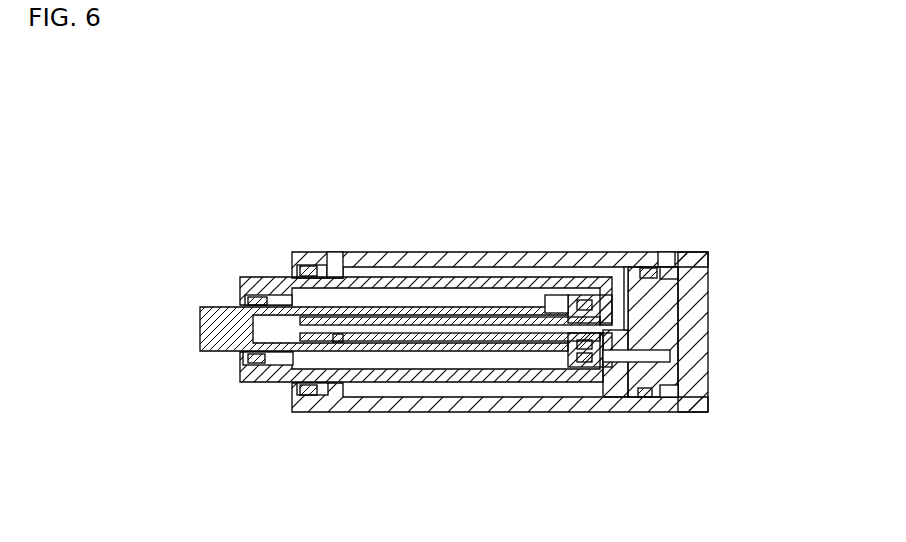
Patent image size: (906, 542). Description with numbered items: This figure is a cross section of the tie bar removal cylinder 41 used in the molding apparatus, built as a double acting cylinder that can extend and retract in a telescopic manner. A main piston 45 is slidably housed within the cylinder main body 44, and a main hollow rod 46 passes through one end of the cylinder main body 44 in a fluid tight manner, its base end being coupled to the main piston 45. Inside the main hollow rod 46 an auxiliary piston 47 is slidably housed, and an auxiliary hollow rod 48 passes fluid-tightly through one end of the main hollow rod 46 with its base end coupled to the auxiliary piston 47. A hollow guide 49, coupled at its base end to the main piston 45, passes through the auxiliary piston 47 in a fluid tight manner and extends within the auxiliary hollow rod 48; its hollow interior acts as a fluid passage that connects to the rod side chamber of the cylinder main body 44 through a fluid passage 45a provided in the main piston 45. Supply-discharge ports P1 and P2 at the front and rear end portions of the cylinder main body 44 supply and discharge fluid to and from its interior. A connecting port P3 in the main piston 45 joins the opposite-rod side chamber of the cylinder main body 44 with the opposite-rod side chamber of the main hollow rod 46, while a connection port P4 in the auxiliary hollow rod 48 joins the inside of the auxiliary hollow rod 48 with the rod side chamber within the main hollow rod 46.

The tie bar removal cylinder 41 is at (503, 314).
The cylinder main body 44 is at (500, 280).
The main piston 45 is at (503, 332).
The fluid passage 45a is at (606, 239).
The main hollow rod 46 is at (426, 397).
The auxiliary piston 47 is at (600, 408).
The auxiliary hollow rod 48 is at (450, 417).
The hollow guide 49 is at (325, 425).
The supply-discharge port P1 is at (679, 214).
The supply-discharge port P2 is at (325, 213).
The connecting port P3 is at (704, 359).
The connection port P4 is at (543, 231).